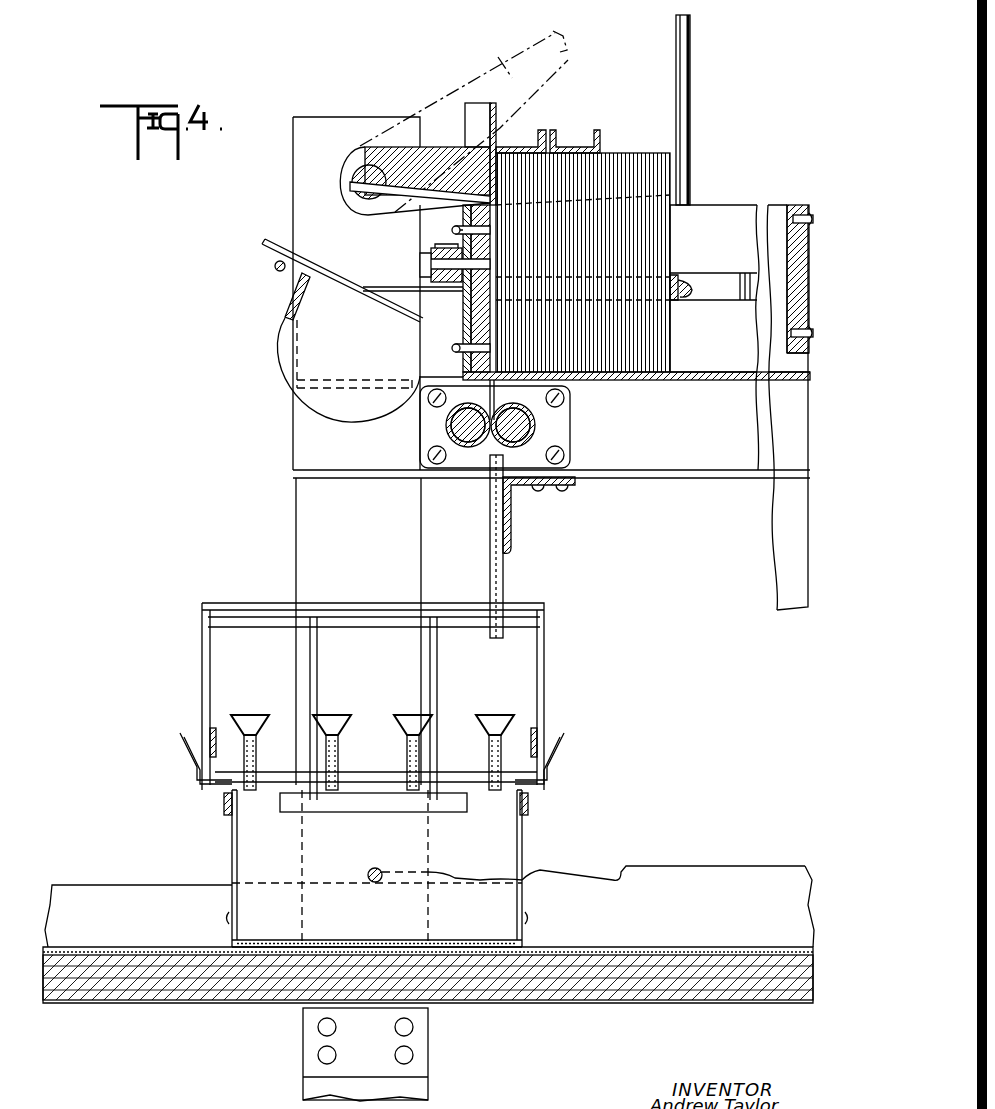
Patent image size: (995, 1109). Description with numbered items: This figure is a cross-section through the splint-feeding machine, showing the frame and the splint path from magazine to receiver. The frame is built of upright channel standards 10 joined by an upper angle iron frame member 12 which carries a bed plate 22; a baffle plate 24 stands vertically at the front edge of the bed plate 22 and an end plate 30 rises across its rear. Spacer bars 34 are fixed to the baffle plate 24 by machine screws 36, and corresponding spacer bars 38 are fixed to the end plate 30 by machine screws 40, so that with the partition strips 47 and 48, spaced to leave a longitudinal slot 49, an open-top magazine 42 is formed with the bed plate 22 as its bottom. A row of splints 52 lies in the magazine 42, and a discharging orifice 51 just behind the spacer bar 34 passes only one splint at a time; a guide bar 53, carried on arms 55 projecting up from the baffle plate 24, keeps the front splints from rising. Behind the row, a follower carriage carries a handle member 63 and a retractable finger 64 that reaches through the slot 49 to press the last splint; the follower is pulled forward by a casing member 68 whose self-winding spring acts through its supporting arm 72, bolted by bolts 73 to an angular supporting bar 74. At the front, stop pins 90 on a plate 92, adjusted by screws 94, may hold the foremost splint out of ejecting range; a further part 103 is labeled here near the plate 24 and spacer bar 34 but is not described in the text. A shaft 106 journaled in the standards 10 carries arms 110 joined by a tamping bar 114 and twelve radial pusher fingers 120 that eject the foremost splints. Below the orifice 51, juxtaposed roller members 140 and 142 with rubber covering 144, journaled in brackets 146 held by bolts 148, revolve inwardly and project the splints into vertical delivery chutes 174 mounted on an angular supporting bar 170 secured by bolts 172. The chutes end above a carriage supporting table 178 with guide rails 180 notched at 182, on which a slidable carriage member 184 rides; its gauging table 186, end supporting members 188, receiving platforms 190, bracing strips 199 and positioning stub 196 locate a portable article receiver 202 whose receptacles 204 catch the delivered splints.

The channel standard 10 is at (293, 516).
The upper angle iron frame member 12 is at (673, 478).
The bed plate 22 is at (690, 381).
The baffle plate 24 is at (467, 336).
The end plate 30 is at (808, 208).
The spacer bar 34 is at (473, 318).
The machine screw 36 is at (452, 229).
The spacer bar 38 is at (792, 310).
The machine screw 40 is at (792, 212).
The splint receiving magazine 42 is at (701, 202).
The sheet metal strip 47 is at (728, 215).
The sheet metal strip 48 is at (735, 372).
The longitudinal slot 49 is at (708, 273).
The discharging orifice 51 is at (498, 398).
The splint 52 is at (625, 160).
The angle iron guide bar 53 is at (525, 147).
The arm 55 is at (478, 103).
The handle member 63 is at (690, 50).
The retractable projecting finger 64 is at (683, 297).
The cylindrical casing member 68 is at (286, 370).
The supporting arm 72 is at (265, 241).
The bolt 73 is at (274, 266).
The angular supporting bar 74 is at (296, 297).
The projecting stop pin 90 is at (434, 278).
The plate 92 is at (434, 248).
The adjustment screw 94 is at (421, 260).
The rod 103 is at (463, 292).
The supporting shaft 106 is at (360, 170).
The arm 110 is at (440, 147).
The tamping bar 114 is at (575, 147).
The pusher finger 120 is at (422, 200).
The roller member 140 is at (470, 450).
The roller member 142 is at (565, 455).
The resilient rubber covering 144 is at (537, 425).
The bracket 146 is at (428, 457).
The bolt 148 is at (565, 397).
The angular supporting bar 170 is at (512, 525).
The bolt 172 is at (547, 490).
The delivery chute 174 is at (504, 573).
The carriage supporting table 178 is at (684, 948).
The guide rail 180 is at (699, 866).
The notch 182 is at (470, 872).
The slidable carriage member 184 is at (230, 902).
The gauging table 186 is at (470, 944).
The end supporting member 188 is at (232, 852).
The receiving platform 190 is at (216, 785).
The stub 196 is at (375, 868).
The bracing strip 199 is at (225, 812).
The portable article receiver 202 is at (548, 669).
The receiving receptacle 204 is at (330, 715).